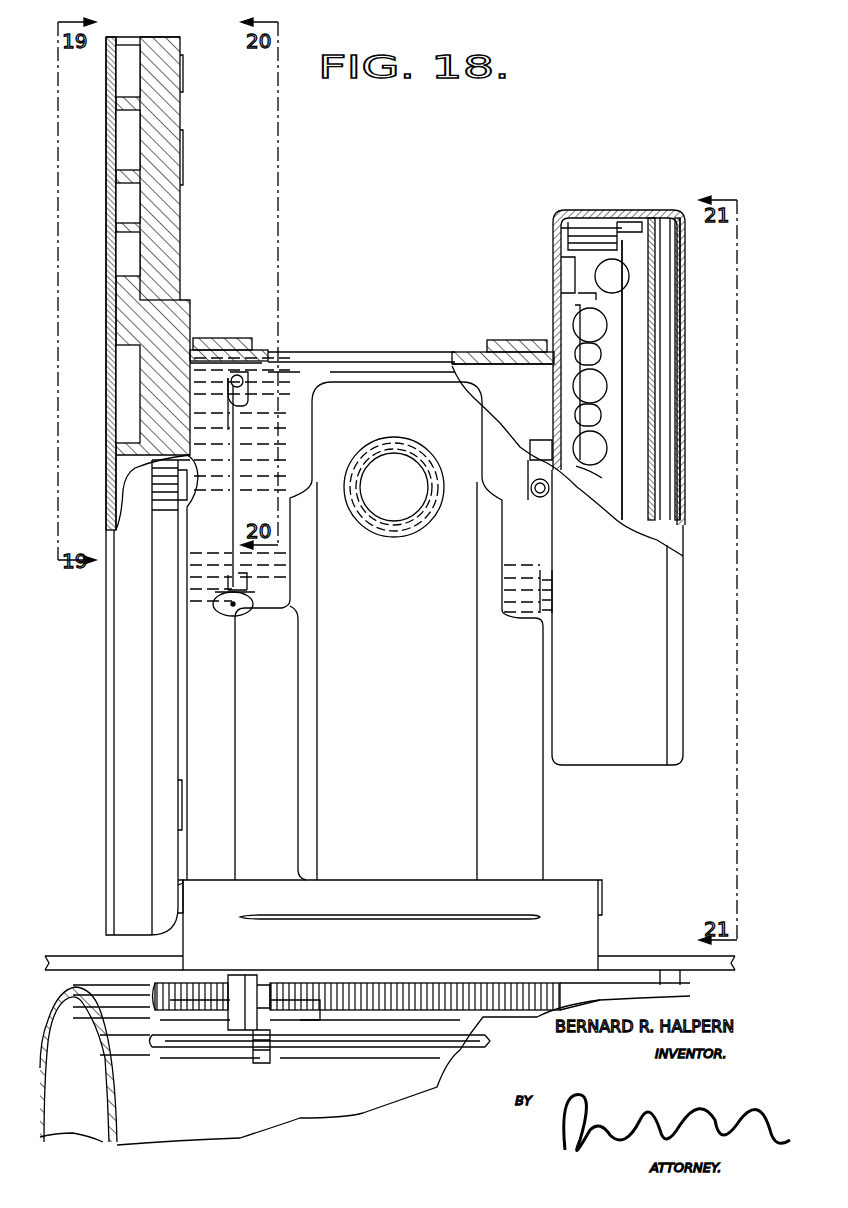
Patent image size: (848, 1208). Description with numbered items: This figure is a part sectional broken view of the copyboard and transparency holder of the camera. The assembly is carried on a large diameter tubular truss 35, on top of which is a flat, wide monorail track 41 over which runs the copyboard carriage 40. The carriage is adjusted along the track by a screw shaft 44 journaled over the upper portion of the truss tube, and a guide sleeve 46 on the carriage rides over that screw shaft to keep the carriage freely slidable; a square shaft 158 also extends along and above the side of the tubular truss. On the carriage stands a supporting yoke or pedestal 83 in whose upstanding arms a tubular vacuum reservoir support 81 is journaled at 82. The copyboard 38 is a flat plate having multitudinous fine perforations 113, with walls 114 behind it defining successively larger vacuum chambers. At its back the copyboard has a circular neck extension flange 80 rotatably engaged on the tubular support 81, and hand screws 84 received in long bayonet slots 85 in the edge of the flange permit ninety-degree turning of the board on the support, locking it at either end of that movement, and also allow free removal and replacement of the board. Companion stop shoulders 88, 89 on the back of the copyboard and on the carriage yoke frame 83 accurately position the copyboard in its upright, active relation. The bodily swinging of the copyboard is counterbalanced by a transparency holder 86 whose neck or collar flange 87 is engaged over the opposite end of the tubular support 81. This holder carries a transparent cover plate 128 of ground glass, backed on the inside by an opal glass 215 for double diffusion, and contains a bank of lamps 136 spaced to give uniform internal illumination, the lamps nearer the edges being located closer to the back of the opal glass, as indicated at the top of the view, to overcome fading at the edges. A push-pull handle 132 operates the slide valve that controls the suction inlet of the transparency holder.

The copyboard 38 is at (148, 40).
The fine perforations 113 is at (113, 183).
The walls 114 is at (118, 270).
The circular neck extension flange 80 is at (226, 340).
The tubular vacuum reservoir support 81 is at (268, 352).
The neck or collar flange 87 is at (520, 342).
The bayonet slots 85 is at (250, 410).
The supporting yoke or pedestal 83 is at (369, 619).
The journal 82 is at (392, 455).
The hand screws 84 is at (224, 612).
The stop shoulder 88 is at (185, 870).
The stop shoulder 89 is at (196, 880).
The copyboard carriage 40 is at (592, 942).
The monorail track 41 is at (62, 956).
The screw shaft 44 is at (688, 990).
The guide sleeve 46 is at (306, 1030).
The square shaft 158 is at (410, 1045).
The tubular truss 35 is at (50, 1012).
The transparency holder 86 is at (616, 210).
The opal glass 215 is at (650, 260).
The transparent cover plate 128 is at (680, 300).
The lamps 136 is at (595, 325).
The push-pull handle 132 is at (548, 496).